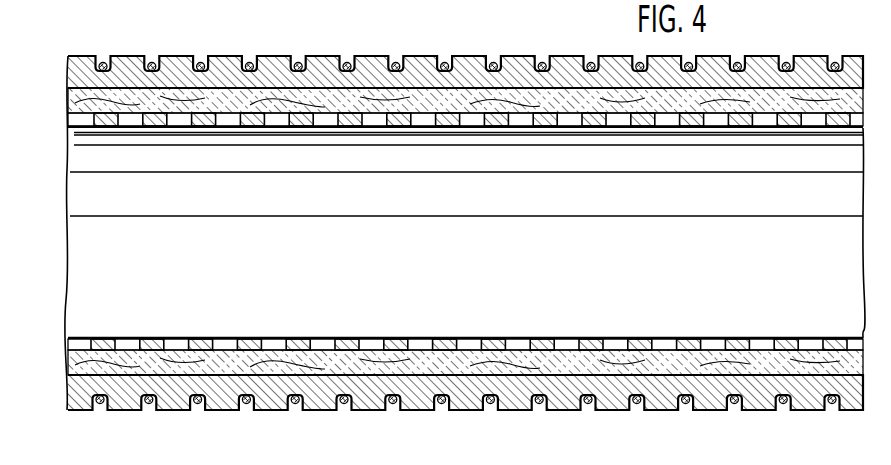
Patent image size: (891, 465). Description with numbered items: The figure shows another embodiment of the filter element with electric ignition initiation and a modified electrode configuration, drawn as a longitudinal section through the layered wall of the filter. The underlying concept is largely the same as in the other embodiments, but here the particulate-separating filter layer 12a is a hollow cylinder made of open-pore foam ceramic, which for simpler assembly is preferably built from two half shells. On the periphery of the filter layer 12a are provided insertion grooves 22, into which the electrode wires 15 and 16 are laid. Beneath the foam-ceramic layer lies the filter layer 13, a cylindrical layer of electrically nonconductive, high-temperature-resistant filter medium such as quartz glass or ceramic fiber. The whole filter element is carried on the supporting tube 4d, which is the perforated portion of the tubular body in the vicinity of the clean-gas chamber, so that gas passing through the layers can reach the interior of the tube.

The particulate-separating filter layer 12a is at (565, 80).
The filter layer 13 is at (270, 97).
The electrode wire 15 is at (297, 62).
The electrode wire 16 is at (346, 62).
The insertion groove 22 is at (396, 62).
The supporting tube 4d is at (452, 120).